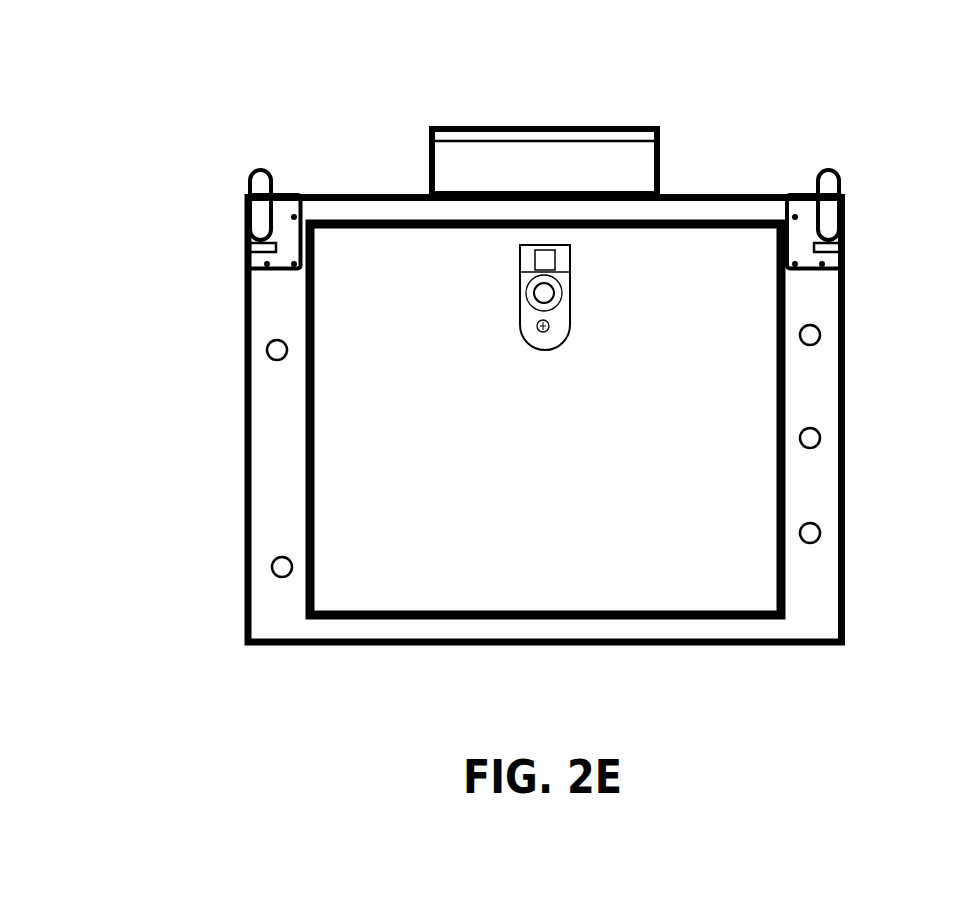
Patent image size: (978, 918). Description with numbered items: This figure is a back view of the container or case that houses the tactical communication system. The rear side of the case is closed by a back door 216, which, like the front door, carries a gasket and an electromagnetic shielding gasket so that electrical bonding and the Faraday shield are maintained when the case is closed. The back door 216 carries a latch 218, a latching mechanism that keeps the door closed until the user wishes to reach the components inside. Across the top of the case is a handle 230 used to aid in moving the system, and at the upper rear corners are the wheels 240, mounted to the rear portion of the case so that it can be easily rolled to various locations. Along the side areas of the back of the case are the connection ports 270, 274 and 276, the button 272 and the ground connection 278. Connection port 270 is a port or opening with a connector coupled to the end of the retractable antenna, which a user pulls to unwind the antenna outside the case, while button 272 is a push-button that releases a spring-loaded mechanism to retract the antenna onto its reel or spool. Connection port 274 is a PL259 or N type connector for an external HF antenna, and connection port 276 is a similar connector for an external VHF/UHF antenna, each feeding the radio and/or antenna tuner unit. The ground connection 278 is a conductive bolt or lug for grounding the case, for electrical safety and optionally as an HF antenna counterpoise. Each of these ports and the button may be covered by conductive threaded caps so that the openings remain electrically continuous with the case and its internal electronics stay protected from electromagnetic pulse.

The back door 216 is at (658, 568).
The latch 218 is at (560, 330).
The handle 230 is at (649, 153).
The wheels 240 is at (267, 189).
The connection port 270 is at (820, 332).
The button 272 is at (820, 435).
The connection port 274 is at (820, 530).
The connection port 276 is at (268, 345).
The ground connection 278 is at (273, 563).